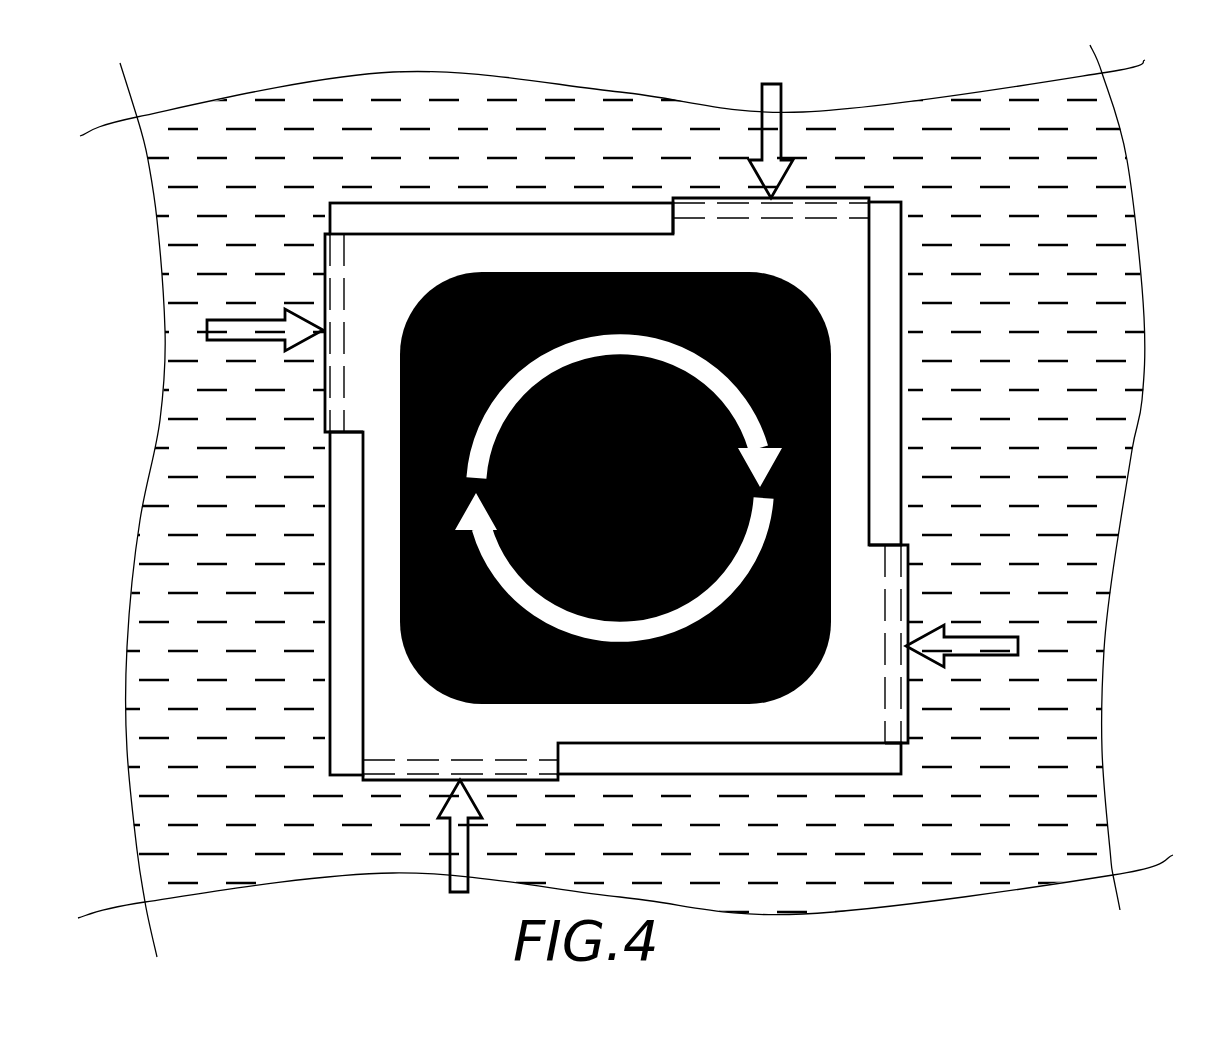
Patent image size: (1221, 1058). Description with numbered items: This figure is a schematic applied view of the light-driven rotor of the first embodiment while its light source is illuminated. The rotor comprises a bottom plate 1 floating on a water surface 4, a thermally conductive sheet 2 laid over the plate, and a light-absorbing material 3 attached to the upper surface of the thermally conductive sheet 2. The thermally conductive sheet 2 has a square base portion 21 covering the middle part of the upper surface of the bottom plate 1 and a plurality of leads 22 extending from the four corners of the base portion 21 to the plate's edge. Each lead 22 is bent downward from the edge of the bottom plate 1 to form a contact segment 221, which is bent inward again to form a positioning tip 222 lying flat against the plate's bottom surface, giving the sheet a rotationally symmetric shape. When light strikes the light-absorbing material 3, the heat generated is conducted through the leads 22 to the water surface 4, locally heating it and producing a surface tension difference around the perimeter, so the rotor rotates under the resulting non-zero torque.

The bottom plate 1 is at (322, 608).
The thermally conductive sheet 2 is at (872, 420).
The base portion 21 is at (607, 255).
The lead 22 is at (852, 677).
The contact segment 221 is at (965, 583).
The positioning tip 222 is at (883, 670).
The light-absorbing material 3 is at (390, 480).
The water surface 4 is at (235, 233).